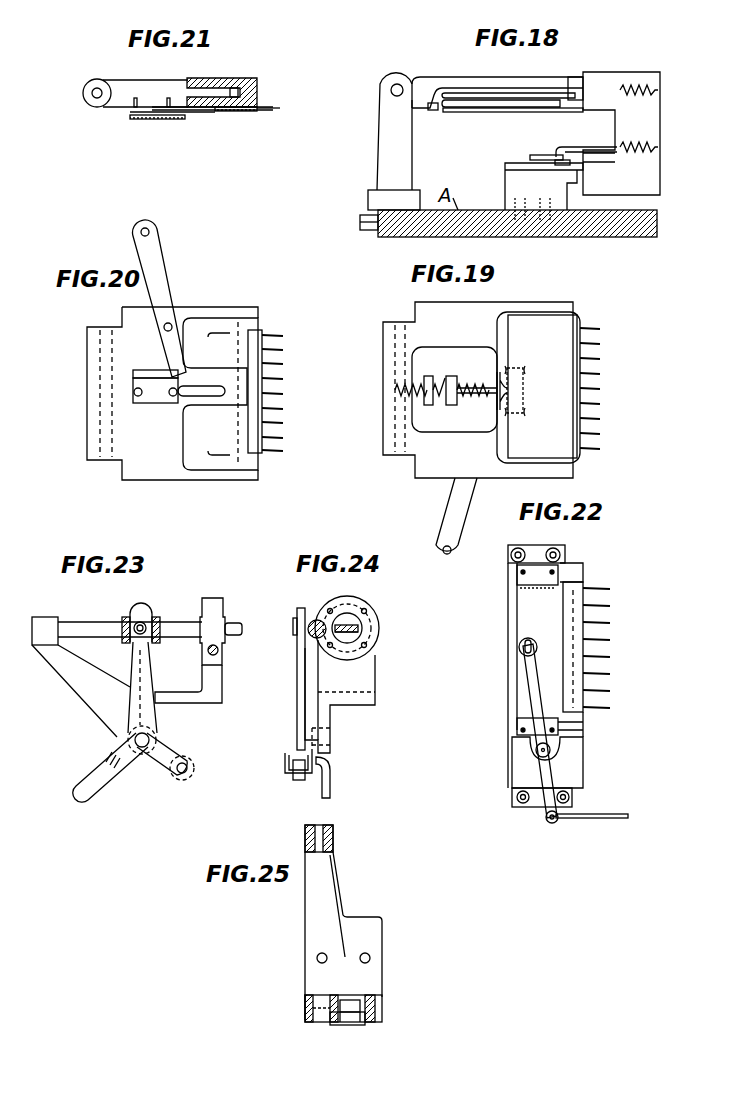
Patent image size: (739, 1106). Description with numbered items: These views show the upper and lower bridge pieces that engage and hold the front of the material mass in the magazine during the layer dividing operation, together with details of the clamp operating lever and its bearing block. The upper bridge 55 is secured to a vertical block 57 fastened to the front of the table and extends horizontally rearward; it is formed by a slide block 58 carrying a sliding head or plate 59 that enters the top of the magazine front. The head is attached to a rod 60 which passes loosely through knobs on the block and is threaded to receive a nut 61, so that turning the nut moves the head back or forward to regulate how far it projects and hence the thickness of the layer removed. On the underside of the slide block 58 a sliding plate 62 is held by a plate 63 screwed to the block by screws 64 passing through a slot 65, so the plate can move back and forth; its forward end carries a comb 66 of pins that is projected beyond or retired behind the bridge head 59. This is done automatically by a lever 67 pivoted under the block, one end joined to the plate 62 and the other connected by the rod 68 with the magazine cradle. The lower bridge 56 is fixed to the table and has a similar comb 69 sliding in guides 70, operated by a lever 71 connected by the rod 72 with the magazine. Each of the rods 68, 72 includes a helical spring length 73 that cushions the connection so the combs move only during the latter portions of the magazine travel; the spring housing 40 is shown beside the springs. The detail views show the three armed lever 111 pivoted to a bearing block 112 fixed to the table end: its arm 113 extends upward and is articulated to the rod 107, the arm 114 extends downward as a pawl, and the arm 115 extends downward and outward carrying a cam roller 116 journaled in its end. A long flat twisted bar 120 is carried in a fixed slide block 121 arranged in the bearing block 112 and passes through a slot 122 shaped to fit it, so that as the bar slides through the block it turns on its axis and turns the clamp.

In FIG. 18, the spring housing block 40 is at (621, 133).
In FIG. 18, the upper bridge 55 is at (476, 78).
In FIG. 20, the upper bridge 55 is at (172, 393).
In FIG. 18, the lower bridge 56 is at (544, 192).
In FIG. 22, the lower bridge 56 is at (547, 772).
In FIG. 18, the vertical block 57 is at (394, 141).
In FIG. 21, the slide block 58 is at (244, 90).
In FIG. 18, the slide block 58 is at (415, 84).
In FIG. 20, the slide block 58 is at (154, 358).
In FIG. 21, the sliding head or plate 59 is at (258, 98).
In FIG. 19, the sliding head or plate 59 is at (548, 387).
In FIG. 19, the rod 60 is at (480, 394).
In FIG. 19, the nut 61 is at (425, 387).
In FIG. 21, the sliding plate 62 is at (236, 112).
In FIG. 20, the sliding plate 62 is at (212, 382).
In FIG. 21, the plate 63 is at (150, 113).
In FIG. 20, the plate 63 is at (155, 390).
In FIG. 20, the screws 64 is at (170, 396).
In FIG. 21, the slot 65 is at (190, 119).
In FIG. 20, the slot 65 is at (200, 394).
In FIG. 21, the comb 66 is at (265, 111).
In FIG. 18, the comb 66 is at (570, 110).
In FIG. 20, the comb 66 is at (270, 352).
In FIG. 18, the lever 67 is at (433, 112).
In FIG. 20, the lever 67 is at (160, 290).
In FIG. 19, the lever 67 is at (470, 486).
In FIG. 18, the rod 68 is at (545, 93).
In FIG. 22, the comb 69 is at (577, 631).
In FIG. 22, the guides 70 is at (551, 580).
In FIG. 18, the lever 71 is at (530, 157).
In FIG. 22, the lever 71 is at (537, 712).
In FIG. 18, the rod 72 is at (560, 147).
In FIG. 22, the rod 72 is at (600, 819).
In FIG. 18, the helical spring length 73 is at (662, 147).
In FIG. 23, the rod 107 is at (102, 632).
In FIG. 24, the rod 107 is at (314, 620).
In FIG. 23, the three armed lever 111 is at (148, 687).
In FIG. 23, the bearing block 112 is at (232, 686).
In FIG. 24, the bearing block 112 is at (340, 696).
In FIG. 25, the bearing block 112 is at (343, 923).
In FIG. 23, the arm 113 is at (138, 661).
In FIG. 24, the arm 113 is at (297, 663).
In FIG. 23, the arm 114 is at (98, 787).
In FIG. 24, the arm 114 is at (330, 778).
In FIG. 23, the arm 115 is at (168, 754).
In FIG. 24, the arm 115 is at (287, 776).
In FIG. 23, the cam roller 116 is at (190, 775).
In FIG. 24, the cam roller 116 is at (298, 782).
In FIG. 24, the bar 120 is at (352, 624).
In FIG. 24, the slide block 121 is at (360, 628).
In FIG. 25, the slide block 121 is at (368, 1008).
In FIG. 24, the slot 122 is at (358, 631).
In FIG. 25, the slot 122 is at (353, 1013).